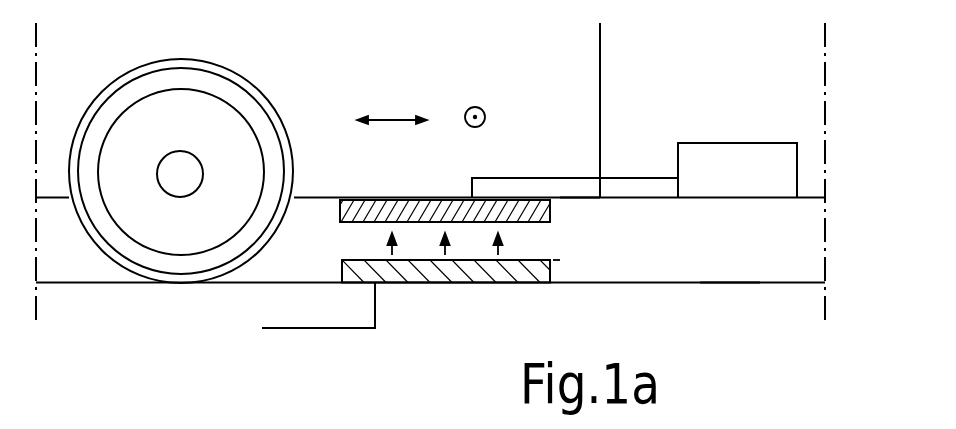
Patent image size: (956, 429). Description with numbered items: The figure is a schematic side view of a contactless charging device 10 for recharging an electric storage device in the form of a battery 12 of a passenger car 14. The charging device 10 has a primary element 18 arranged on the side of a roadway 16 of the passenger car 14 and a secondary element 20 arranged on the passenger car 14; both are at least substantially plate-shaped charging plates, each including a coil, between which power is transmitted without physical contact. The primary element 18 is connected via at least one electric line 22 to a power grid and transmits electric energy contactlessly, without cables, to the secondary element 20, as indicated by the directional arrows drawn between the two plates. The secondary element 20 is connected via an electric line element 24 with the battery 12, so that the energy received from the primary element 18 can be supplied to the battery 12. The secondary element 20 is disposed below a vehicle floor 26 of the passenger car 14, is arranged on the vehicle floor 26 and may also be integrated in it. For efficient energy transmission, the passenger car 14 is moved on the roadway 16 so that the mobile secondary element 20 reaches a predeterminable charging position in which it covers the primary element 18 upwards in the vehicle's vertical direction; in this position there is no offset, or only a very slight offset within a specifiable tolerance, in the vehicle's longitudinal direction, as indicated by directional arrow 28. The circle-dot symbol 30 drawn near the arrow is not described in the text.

The charging device 10 is at (566, 265).
The battery 12 is at (722, 155).
The passenger car 14 is at (732, 238).
The roadway 16 is at (650, 282).
The primary element 18 is at (342, 268).
The secondary element 20 is at (418, 210).
The electric line 22 is at (378, 298).
The electric line element 24 is at (523, 178).
The vehicle floor 26 is at (583, 200).
The directional arrow 28 is at (392, 118).
The perpendicular direction (circle-dot symbol) 30 is at (475, 107).